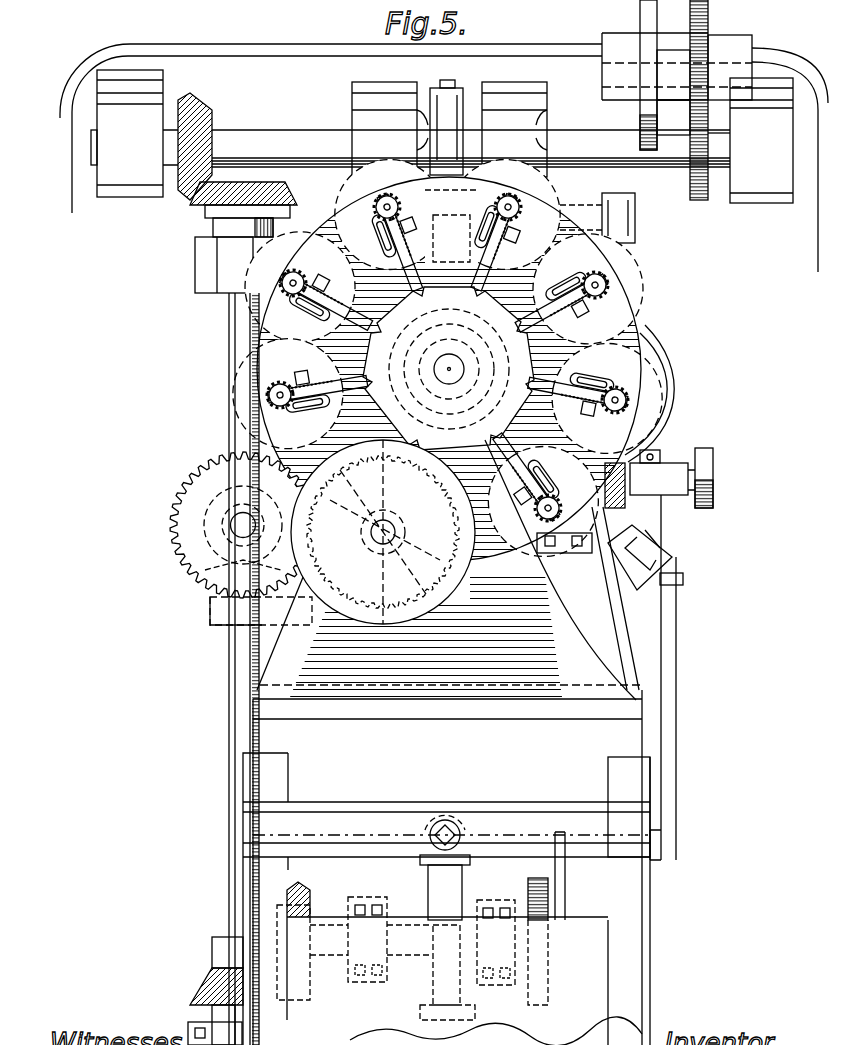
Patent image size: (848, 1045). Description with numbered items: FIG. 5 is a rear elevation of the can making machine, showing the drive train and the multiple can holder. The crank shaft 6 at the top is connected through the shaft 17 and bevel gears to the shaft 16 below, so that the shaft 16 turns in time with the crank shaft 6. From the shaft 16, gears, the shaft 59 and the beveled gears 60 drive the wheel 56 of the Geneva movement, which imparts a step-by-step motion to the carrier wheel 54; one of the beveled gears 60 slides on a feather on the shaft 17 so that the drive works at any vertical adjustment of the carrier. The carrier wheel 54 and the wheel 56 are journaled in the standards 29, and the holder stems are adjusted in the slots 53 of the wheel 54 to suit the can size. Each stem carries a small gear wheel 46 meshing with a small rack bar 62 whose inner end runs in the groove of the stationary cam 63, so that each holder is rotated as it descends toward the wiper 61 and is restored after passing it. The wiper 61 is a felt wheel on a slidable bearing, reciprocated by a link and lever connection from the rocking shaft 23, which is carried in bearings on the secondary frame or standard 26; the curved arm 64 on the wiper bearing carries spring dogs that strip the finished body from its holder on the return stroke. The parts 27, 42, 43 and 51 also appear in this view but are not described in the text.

The crank shaft 6 is at (283, 143).
The shaft 16 is at (397, 928).
The shaft 17 is at (238, 652).
The rocking shaft 23 is at (673, 848).
The secondary frame or standard 26 is at (535, 918).
The bracket 27 is at (439, 972).
The standards 29 is at (480, 588).
The rack bar 42 is at (650, 17).
The bracket 43 is at (602, 205).
The small gear wheel 46 is at (630, 392).
The plate 51 is at (397, 484).
The slots 53 is at (595, 386).
The carrier wheel 54 is at (258, 333).
The Geneva wheel 56 is at (383, 532).
The shaft 59 is at (420, 434).
The beveled gears 60 is at (212, 473).
The wiper 61 is at (622, 513).
The small rack bar 62 is at (672, 405).
The stationary cam 63 is at (498, 306).
The curved arm 64 is at (672, 392).